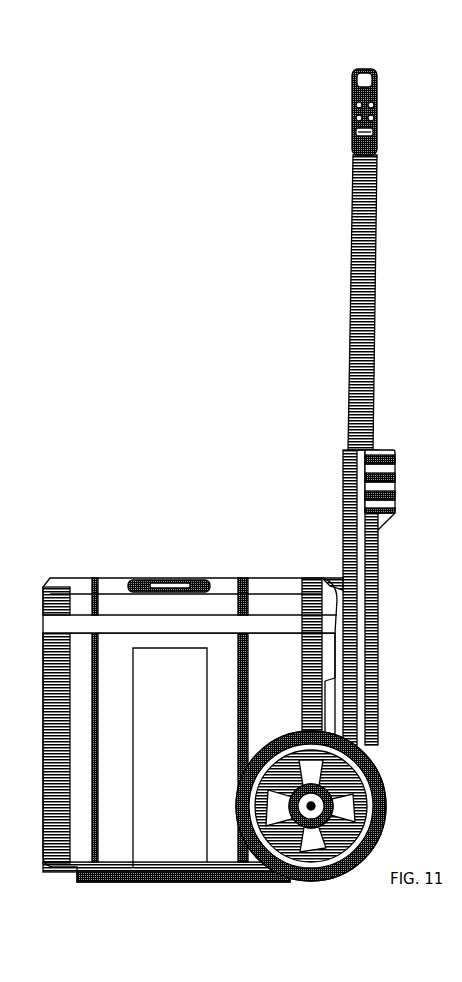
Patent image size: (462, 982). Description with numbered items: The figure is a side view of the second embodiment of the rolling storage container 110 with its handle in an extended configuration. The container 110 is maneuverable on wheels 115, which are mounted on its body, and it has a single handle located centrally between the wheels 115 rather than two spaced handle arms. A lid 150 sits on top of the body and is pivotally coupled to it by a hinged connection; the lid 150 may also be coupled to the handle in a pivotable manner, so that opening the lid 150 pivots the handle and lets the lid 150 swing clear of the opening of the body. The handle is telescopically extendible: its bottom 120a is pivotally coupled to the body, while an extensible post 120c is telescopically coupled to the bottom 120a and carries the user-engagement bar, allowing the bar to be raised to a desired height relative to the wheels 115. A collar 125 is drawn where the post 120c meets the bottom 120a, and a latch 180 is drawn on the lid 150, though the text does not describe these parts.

The container 110 is at (167, 822).
The wheels 115 is at (386, 822).
The bottom of the handle 120a is at (360, 692).
The extensible post 120c is at (358, 358).
The handle clamp 125 is at (360, 487).
The lid 150 is at (253, 604).
The latch 180 is at (132, 590).